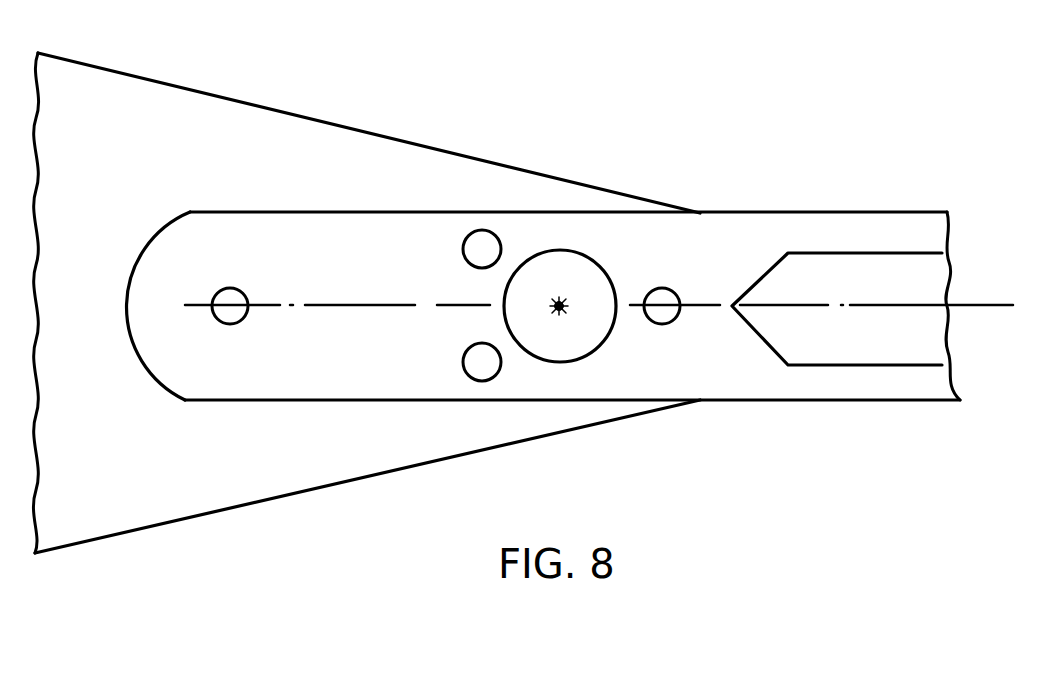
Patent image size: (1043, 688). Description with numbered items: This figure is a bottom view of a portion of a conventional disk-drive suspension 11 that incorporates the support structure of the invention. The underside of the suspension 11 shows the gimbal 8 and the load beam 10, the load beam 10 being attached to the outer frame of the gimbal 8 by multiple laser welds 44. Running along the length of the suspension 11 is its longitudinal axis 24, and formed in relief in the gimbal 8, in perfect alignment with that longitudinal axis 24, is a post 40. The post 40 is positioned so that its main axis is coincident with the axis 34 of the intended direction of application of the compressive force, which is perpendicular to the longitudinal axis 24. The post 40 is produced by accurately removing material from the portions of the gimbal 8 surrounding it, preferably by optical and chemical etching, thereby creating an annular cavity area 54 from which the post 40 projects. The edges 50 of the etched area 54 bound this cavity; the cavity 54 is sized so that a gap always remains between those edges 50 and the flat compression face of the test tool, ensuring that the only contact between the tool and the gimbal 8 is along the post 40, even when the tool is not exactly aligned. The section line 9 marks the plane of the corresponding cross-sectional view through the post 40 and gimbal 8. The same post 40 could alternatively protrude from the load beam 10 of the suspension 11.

The gimbal 8 is at (748, 235).
The line 9— 9 is at (485, 99).
The load beam 10 is at (272, 134).
The suspension 11 is at (621, 193).
The longitudinal axis 24 is at (943, 307).
The axis 34 is at (562, 316).
The post 40 is at (570, 302).
The laser welds 44 is at (232, 288).
The edges of the etched area 50 is at (530, 258).
The annular cavity area 54 is at (564, 270).